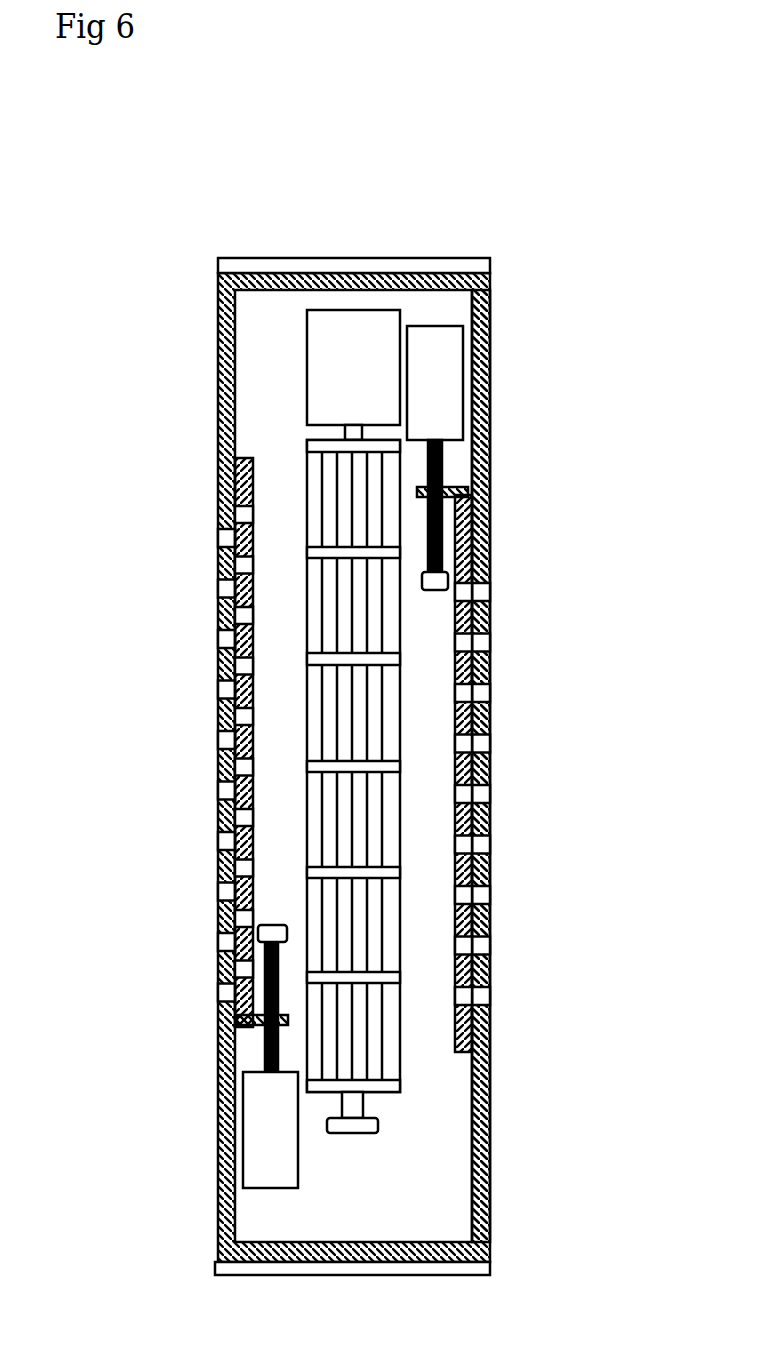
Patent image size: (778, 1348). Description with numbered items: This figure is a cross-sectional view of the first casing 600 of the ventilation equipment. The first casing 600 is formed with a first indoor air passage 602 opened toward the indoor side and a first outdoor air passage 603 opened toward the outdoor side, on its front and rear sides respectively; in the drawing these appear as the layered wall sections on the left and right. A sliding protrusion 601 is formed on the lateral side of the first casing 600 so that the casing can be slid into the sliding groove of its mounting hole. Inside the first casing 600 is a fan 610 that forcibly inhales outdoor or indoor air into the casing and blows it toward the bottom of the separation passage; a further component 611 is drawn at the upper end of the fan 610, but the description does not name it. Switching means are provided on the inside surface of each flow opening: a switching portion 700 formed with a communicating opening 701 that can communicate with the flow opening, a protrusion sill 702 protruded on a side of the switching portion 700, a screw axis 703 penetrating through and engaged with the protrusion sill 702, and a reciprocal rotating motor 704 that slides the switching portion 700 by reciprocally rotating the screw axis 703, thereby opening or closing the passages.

The first casing 600 is at (218, 298).
The sliding protrusion 601 is at (394, 262).
The first indoor air passage 602 is at (227, 590).
The first outdoor air passage 603 is at (483, 741).
The fan 610 is at (374, 1033).
The drive unit 611 is at (323, 357).
The switching portion 700 is at (488, 929).
The communicating opening 701 is at (460, 843).
The protrusion sill 702 is at (458, 480).
The screw axis 703 is at (441, 538).
The reciprocal rotating motor 704 is at (443, 352).